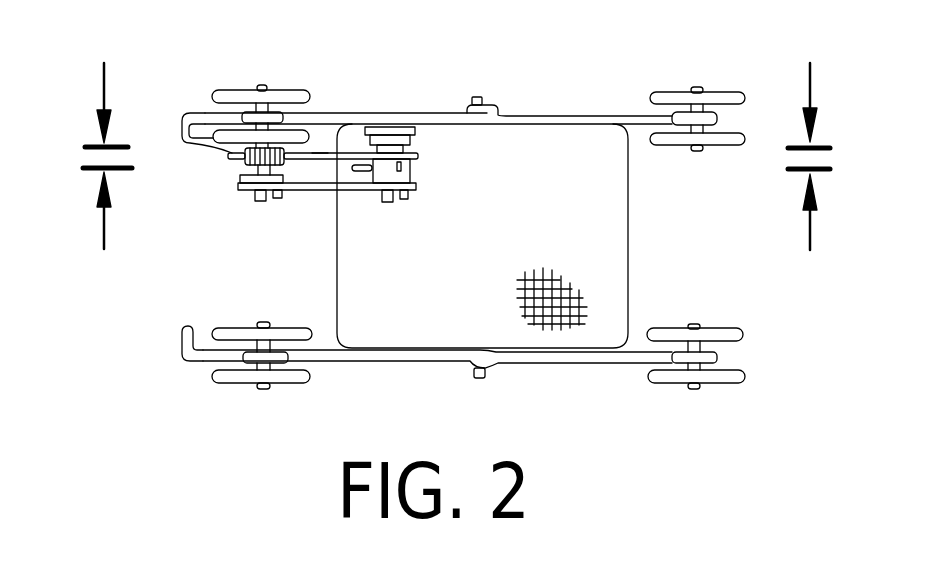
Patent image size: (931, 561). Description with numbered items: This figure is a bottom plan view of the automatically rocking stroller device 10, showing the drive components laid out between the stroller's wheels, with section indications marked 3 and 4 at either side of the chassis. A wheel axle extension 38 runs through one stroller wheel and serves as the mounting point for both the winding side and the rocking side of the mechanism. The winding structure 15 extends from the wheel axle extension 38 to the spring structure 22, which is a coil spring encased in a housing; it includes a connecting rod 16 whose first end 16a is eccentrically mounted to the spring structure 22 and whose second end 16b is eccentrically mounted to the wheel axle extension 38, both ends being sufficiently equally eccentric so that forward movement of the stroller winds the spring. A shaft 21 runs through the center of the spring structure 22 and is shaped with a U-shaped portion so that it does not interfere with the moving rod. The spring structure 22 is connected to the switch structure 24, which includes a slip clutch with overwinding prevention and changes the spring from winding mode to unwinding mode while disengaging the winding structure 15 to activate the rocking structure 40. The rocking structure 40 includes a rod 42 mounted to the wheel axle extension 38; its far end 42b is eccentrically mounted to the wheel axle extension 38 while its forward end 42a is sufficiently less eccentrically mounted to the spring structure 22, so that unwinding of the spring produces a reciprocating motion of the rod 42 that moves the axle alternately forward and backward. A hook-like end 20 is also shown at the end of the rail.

The section line 3- 3 is at (457, 84).
The section line 4- 4 is at (456, 233).
The automatically rocking stroller device 10 is at (392, 102).
The winding structure 15 is at (290, 198).
The connecting rod 16 is at (317, 193).
The first end of connecting rod 16a is at (412, 195).
The second end of connecting rod 16b is at (238, 186).
The hook 20 is at (186, 126).
The shaft 21 is at (382, 202).
The spring structure 22 is at (414, 138).
The switch structure 24 is at (412, 170).
The wheel axle extension 38 is at (258, 201).
The rocking structure 40 is at (320, 152).
The rod 42 is at (336, 130).
The forward end of rod 42a is at (418, 157).
The far end of rod 42b is at (228, 157).